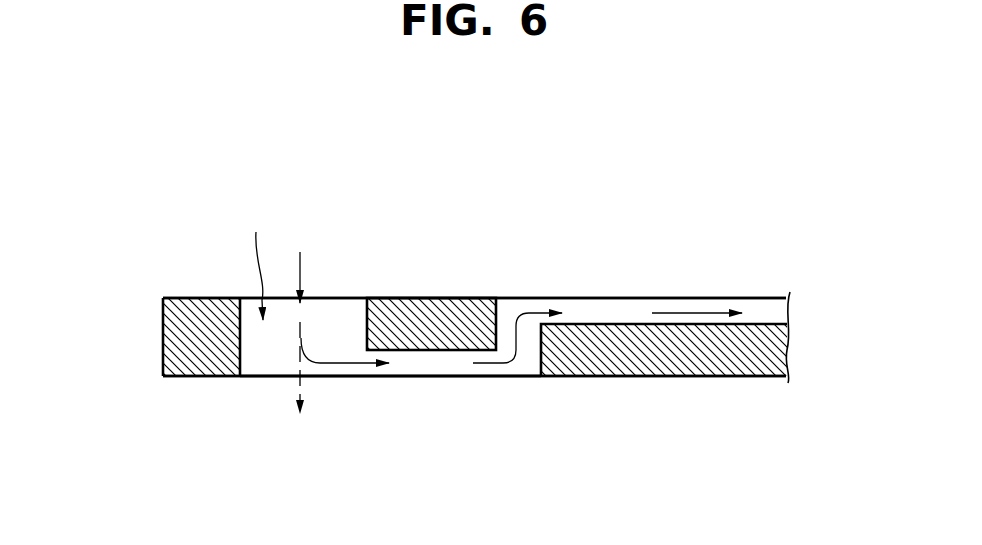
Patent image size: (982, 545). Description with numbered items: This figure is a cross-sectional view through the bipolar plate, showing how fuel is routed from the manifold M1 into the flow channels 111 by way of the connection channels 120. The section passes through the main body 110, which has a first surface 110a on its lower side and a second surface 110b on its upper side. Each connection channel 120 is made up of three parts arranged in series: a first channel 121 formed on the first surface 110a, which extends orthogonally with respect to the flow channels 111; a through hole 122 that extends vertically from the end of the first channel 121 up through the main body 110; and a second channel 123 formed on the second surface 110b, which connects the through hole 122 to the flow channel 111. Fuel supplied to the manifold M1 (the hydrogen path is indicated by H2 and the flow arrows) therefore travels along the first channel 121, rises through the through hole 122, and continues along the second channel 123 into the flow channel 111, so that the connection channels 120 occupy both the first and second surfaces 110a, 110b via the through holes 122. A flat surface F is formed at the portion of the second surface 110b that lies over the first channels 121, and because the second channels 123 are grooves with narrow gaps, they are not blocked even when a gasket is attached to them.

The main body 110 is at (178, 330).
The first surface 110a is at (212, 378).
The second surface 110b is at (200, 296).
The flow channels 111 is at (767, 310).
The connection channels 120 is at (513, 406).
The first channels 121 is at (428, 371).
The through holes 122 is at (522, 366).
The second channels 123 is at (664, 381).
The manifold M1 is at (253, 260).
The hydrogen gas H2 is at (300, 317).
The flat surface F is at (443, 296).